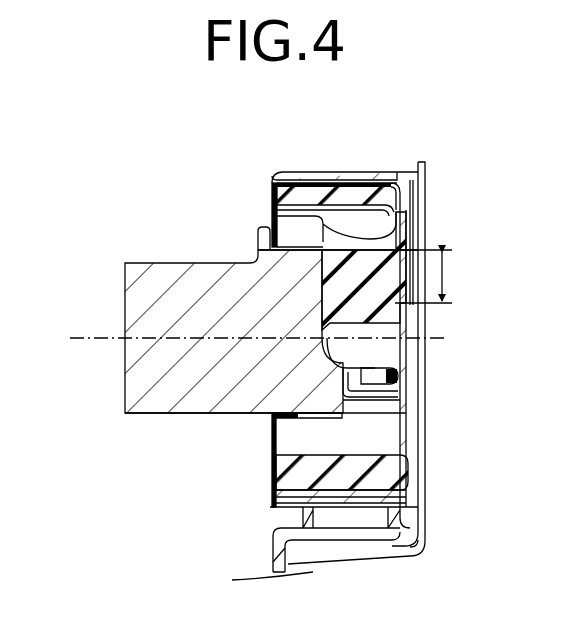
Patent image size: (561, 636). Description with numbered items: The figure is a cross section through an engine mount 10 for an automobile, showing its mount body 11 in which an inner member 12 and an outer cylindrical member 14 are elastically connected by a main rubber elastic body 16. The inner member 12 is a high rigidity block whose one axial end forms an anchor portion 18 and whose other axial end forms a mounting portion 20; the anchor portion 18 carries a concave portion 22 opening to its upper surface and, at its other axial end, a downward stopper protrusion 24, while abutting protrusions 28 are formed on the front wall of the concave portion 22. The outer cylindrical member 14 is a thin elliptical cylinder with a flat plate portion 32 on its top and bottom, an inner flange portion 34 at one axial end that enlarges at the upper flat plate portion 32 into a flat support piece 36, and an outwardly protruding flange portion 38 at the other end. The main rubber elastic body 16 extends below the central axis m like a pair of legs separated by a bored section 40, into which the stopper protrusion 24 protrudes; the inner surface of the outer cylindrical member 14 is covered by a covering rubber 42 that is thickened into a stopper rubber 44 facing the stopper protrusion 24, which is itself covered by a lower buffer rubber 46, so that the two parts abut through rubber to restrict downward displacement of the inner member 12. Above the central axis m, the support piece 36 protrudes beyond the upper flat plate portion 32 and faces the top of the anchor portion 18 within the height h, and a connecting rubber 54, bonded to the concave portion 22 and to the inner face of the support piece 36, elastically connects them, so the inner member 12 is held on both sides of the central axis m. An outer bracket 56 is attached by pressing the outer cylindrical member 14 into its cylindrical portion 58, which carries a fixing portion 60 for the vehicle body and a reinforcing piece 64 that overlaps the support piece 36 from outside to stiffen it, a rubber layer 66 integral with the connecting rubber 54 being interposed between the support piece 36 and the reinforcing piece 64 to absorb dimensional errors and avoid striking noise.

The engine mount 10 is at (137, 228).
The mount body 11 is at (262, 188).
The inner member 12 is at (156, 420).
The outer cylindrical member 14 is at (318, 169).
The main rubber elastic body 16 is at (268, 490).
The anchor portion 18 is at (290, 300).
The mounting portion 20 is at (130, 366).
The concave portion 22 is at (373, 362).
The stopper protrusion 24 is at (330, 408).
The abutting protrusions 28 is at (260, 240).
The flat plate portion 32 is at (372, 186).
The inner flange portion 34 is at (410, 488).
The support piece 36 is at (418, 247).
The flange portion 38 is at (275, 176).
The bored section 40 is at (368, 396).
The covering rubber 42 is at (352, 190).
The stopper rubber 44 is at (396, 466).
The lower buffer rubber 46 is at (305, 410).
The connecting rubber 54 is at (386, 308).
The outer bracket 56 is at (422, 552).
The cylindrical portion 58 is at (346, 502).
The fixing portion 60 is at (274, 556).
The reinforcing piece 64 is at (425, 190).
The rubber layer 66 is at (413, 217).
The central axis m is at (120, 338).
The height h is at (430, 276).